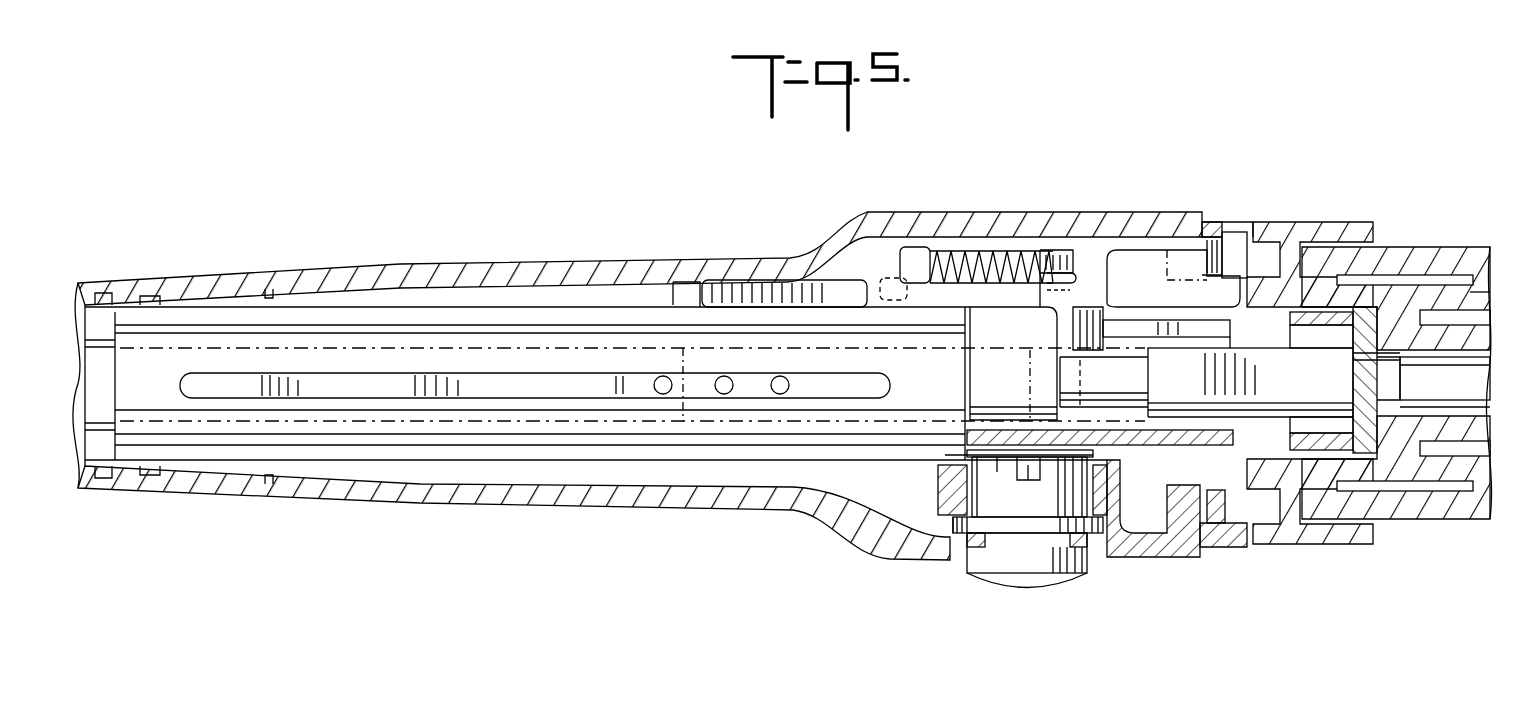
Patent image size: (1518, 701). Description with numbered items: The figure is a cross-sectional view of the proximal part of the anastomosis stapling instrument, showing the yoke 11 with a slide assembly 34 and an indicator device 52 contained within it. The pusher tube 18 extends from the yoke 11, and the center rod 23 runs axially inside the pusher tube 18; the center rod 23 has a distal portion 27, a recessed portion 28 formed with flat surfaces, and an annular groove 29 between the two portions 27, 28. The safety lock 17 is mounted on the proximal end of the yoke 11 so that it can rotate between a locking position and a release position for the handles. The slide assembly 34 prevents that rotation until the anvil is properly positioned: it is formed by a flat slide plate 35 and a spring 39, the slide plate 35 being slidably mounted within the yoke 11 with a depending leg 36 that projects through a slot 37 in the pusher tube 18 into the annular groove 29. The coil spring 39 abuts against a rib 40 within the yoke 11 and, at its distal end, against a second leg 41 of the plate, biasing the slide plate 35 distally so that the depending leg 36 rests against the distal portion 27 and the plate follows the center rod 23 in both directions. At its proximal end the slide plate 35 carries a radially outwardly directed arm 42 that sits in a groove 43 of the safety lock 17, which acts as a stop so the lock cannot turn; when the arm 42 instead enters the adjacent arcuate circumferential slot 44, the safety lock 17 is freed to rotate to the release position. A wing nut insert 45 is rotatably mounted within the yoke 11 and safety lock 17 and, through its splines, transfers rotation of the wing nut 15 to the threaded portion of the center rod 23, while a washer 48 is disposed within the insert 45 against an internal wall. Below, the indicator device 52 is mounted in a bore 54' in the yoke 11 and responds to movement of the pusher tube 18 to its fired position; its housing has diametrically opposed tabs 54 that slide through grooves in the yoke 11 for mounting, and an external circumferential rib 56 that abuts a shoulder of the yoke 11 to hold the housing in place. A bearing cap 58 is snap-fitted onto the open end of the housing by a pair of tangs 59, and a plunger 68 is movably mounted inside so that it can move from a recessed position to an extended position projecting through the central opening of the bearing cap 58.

The yoke 11 is at (524, 258).
The wing nut 15 is at (1454, 246).
The safety lock 17 is at (1340, 225).
The pusher tube 18 is at (1168, 444).
The center rod 23 is at (1453, 385).
The distal portion 27 is at (1062, 378).
The recessed portion 28 is at (1268, 395).
The annular groove 29 is at (1150, 378).
The slide assembly 34 is at (1150, 225).
The slide plate 35 is at (720, 290).
The depending leg 36 is at (1103, 333).
The slot 37 is at (1230, 325).
The spring 39 is at (950, 258).
The rib 40 is at (1063, 249).
The second leg 41 is at (918, 246).
The arm 42 is at (1244, 238).
The groove 43 is at (1222, 228).
The arcuate circumferential slot 44 is at (1253, 228).
The wing nut insert 45 is at (1471, 291).
The washer 48 is at (1352, 340).
The indicator device 52 is at (1024, 594).
The tabs 54 is at (977, 472).
The bore 54' is at (996, 490).
The external circumferential rib 56 is at (963, 548).
The bearing cap 58 is at (997, 460).
The tangs 59 is at (1029, 466).
The plunger 68 is at (1027, 419).